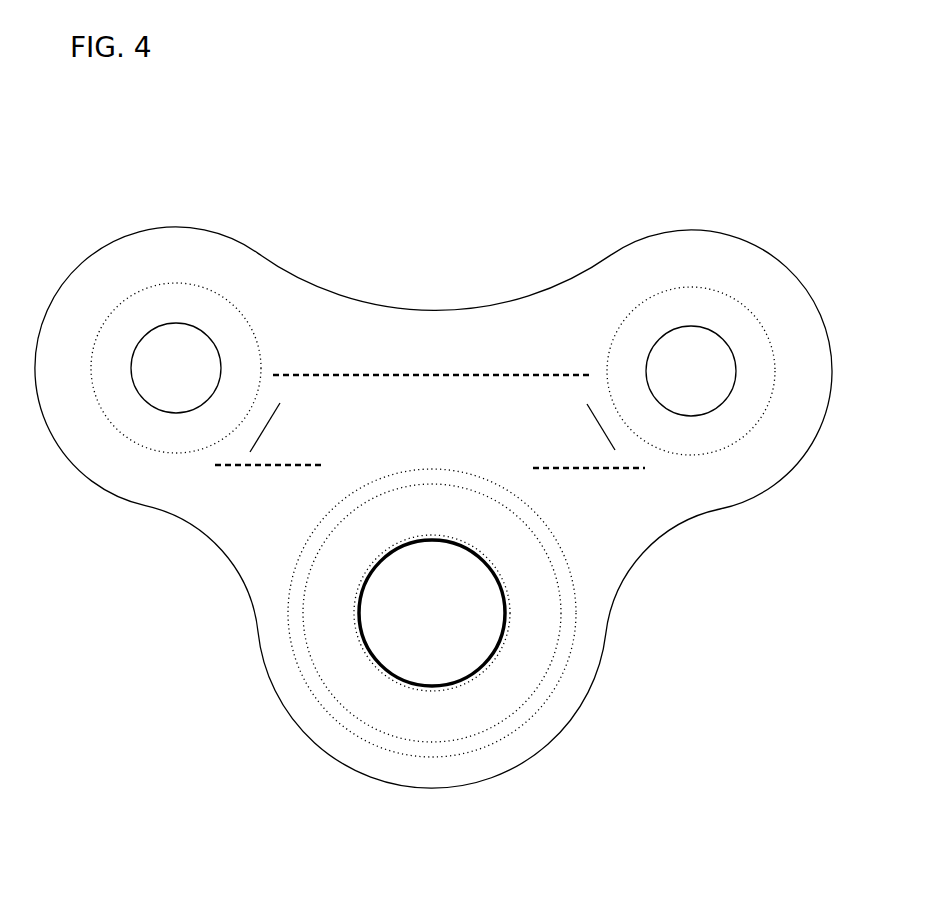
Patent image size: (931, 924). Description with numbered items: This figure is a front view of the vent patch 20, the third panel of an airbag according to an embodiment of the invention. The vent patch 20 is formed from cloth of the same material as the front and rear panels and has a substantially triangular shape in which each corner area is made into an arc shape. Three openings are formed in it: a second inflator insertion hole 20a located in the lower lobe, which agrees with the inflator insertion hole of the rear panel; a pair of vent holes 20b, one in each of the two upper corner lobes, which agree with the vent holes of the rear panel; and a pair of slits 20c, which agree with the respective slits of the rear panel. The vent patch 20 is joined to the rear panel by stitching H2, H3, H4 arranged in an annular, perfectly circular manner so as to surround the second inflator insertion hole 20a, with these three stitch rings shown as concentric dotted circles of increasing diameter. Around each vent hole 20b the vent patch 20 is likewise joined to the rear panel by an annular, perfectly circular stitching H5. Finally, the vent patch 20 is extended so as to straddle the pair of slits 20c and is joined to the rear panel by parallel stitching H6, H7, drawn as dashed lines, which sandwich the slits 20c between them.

The vent patch 20 is at (522, 288).
The second inflator insertion hole 20a is at (470, 678).
The vent holes 20b is at (178, 343).
The slits 20c is at (257, 436).
The stitching H2 is at (507, 642).
The stitching H3 is at (448, 742).
The stitching H4 is at (293, 628).
The stitching H5 is at (153, 288).
The stitching H6 is at (404, 376).
The stitching H7 is at (240, 467).